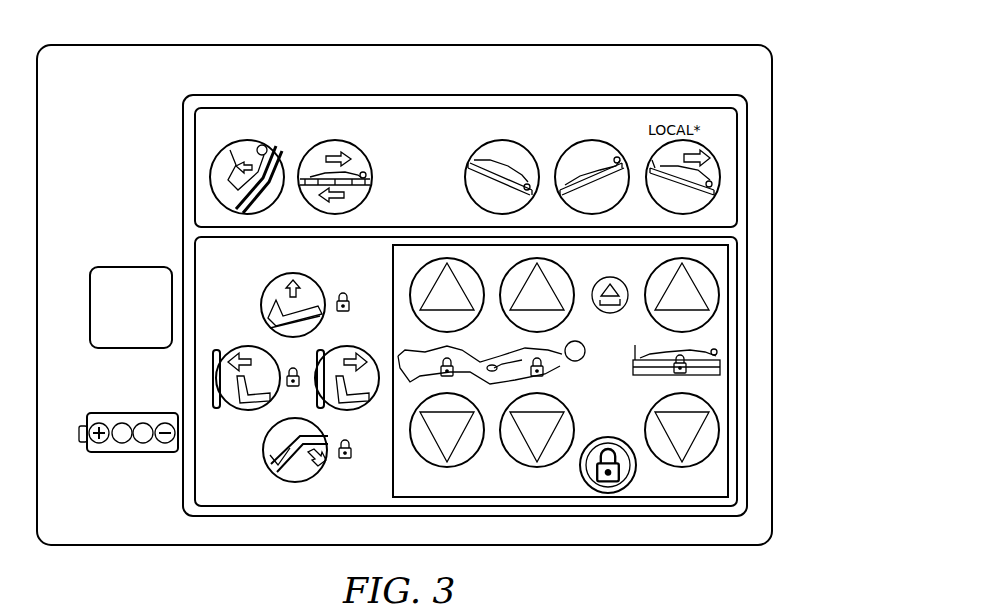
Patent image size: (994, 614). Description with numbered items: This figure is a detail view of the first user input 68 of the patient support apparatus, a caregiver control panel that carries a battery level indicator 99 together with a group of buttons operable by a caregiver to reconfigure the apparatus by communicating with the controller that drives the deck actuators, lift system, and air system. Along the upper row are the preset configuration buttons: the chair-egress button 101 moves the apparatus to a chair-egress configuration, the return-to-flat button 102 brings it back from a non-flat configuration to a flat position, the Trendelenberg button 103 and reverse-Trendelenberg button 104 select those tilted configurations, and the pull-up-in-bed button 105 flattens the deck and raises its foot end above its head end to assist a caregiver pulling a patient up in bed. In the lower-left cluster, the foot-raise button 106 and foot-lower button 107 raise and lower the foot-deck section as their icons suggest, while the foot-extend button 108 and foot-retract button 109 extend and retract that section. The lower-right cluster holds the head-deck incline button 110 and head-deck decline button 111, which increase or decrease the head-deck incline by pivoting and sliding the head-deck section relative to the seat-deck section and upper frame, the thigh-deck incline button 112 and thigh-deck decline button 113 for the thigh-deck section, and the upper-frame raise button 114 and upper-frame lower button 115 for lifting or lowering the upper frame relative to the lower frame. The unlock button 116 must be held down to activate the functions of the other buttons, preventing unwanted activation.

The user input 68 is at (597, 45).
The battery level indicator 99 is at (92, 410).
The chair-egress button 101 is at (252, 140).
The return-to-flat button 102 is at (341, 140).
The Trendelenberg button 103 is at (497, 140).
The reverse-Trendelenberg button 104 is at (587, 140).
The pull-up-in-bed button 105 is at (723, 176).
The foot-raise button 106 is at (285, 272).
The foot-lower button 107 is at (260, 448).
The foot-extend button 108 is at (235, 343).
The foot-retract button 109 is at (362, 345).
The head-deck incline button 110 is at (542, 258).
The head-deck decline button 111 is at (545, 470).
The thigh-deck incline button 112 is at (422, 262).
The thigh-deck decline button 113 is at (447, 470).
The upper-frame raise button 114 is at (720, 287).
The upper-frame lower button 115 is at (720, 423).
The unlock button 116 is at (610, 433).